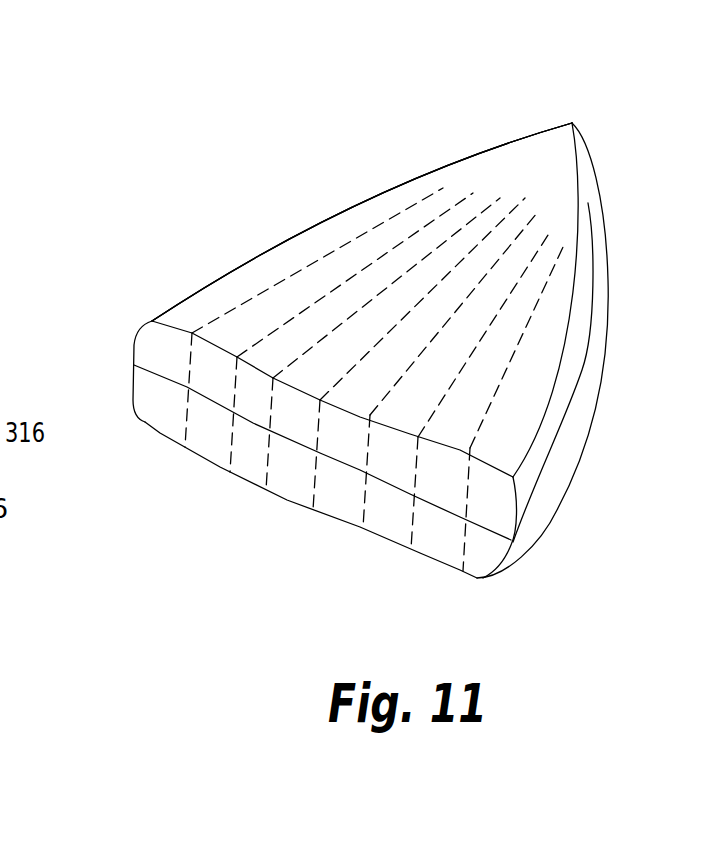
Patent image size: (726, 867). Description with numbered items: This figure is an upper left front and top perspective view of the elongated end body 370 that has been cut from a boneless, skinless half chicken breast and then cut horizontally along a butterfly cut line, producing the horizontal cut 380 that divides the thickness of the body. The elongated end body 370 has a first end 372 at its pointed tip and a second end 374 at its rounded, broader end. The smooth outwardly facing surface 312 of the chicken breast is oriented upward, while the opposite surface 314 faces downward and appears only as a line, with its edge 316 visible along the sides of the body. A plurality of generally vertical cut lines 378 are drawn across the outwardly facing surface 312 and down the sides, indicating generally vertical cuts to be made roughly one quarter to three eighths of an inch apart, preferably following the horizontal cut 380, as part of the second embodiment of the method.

The outwardly facing surface 312 is at (562, 183).
The opposite surface 314 is at (277, 535).
The edge 316 is at (605, 355).
The elongated end body 370 is at (289, 118).
The first end 372 is at (476, 90).
The second end 374 is at (90, 278).
The vertical cut lines 378 is at (247, 305).
The horizontal cut 380 is at (542, 485).